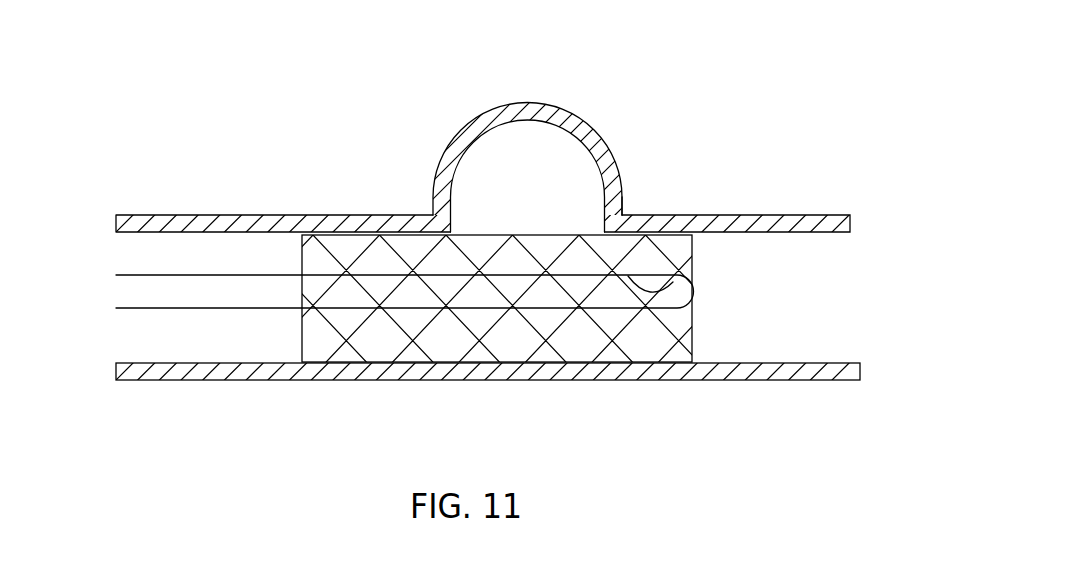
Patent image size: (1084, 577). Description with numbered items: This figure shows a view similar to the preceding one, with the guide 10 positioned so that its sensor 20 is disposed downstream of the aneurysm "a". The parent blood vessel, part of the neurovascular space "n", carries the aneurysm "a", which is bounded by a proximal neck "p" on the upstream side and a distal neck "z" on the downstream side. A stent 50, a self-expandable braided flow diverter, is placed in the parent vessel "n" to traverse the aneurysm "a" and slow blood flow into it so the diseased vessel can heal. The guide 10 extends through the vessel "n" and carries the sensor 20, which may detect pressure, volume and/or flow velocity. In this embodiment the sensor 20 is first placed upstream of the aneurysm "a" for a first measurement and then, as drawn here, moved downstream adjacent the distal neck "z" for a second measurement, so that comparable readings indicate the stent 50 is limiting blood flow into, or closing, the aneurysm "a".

The guide 10 is at (509, 273).
The sensor 20 is at (650, 292).
The stent 50 is at (623, 327).
The aneurysm a is at (557, 120).
The proximal neck p is at (425, 213).
The distal neck z is at (625, 213).
The neurovascular space n is at (850, 215).